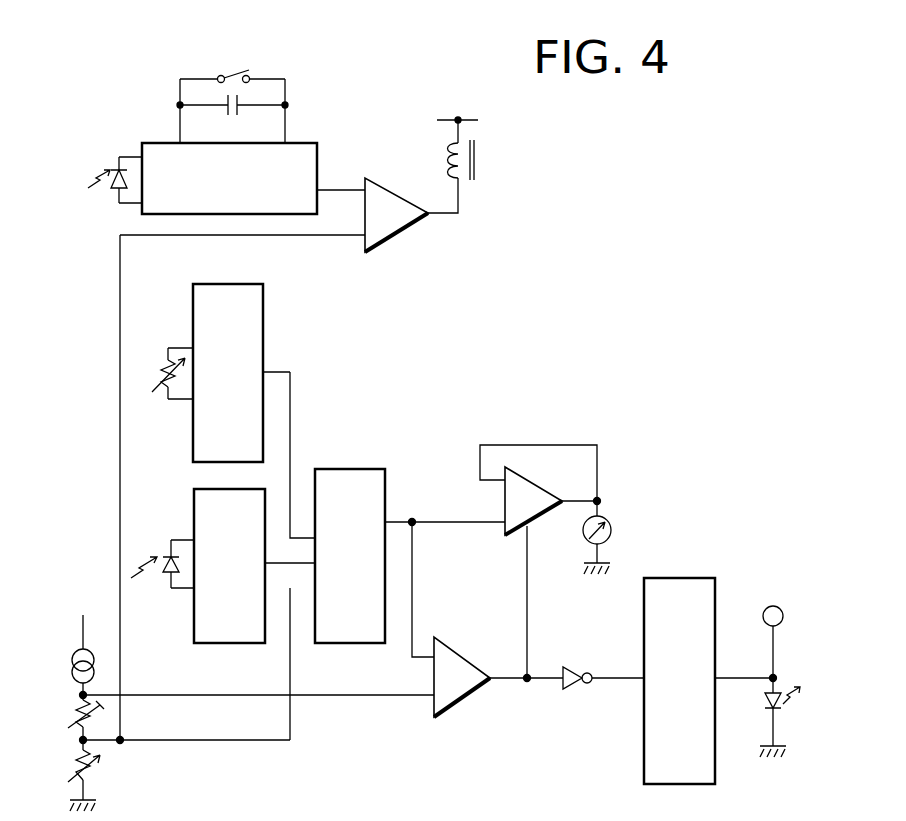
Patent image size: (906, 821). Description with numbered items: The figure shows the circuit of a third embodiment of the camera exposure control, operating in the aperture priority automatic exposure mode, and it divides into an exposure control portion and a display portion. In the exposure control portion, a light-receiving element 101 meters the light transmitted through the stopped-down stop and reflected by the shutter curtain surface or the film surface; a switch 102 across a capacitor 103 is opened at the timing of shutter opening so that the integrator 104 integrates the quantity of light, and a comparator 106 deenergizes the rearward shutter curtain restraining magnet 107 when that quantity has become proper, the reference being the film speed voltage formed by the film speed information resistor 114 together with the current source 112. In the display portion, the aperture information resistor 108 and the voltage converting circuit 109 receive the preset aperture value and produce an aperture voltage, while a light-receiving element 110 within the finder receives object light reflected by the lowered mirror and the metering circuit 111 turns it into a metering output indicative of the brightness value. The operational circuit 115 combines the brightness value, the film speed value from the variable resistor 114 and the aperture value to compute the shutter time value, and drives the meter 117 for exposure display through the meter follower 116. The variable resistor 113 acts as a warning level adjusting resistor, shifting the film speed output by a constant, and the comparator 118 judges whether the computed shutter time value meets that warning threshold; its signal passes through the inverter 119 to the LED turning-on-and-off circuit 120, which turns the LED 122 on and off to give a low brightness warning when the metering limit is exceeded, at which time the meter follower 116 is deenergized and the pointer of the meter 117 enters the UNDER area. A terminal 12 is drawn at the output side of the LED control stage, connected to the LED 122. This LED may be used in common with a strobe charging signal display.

The light-receiving element 101 is at (112, 172).
The switch 102 is at (234, 72).
The capacitor 103 is at (243, 110).
The integrator 104 is at (317, 152).
The comparator 106 is at (398, 234).
The rearward shutter curtain restraining magnet 107 is at (478, 156).
The aperture information resistor 108 is at (165, 372).
The voltage converting circuit 109 is at (263, 322).
The light-receiving element 110 is at (165, 577).
The metering circuit 111 is at (207, 646).
The current source 112 is at (73, 668).
The variable resistor 113 is at (78, 712).
The film speed information resistor 114 is at (78, 768).
The operational circuit 115 is at (343, 468).
The meter follower 116 is at (505, 527).
The meter 117 is at (611, 526).
The comparator 118 is at (460, 700).
The inverter 119 is at (570, 689).
The LED turning-on-and-off circuit 120 is at (644, 776).
The terminal 12 is at (773, 605).
The LED 122 is at (765, 701).